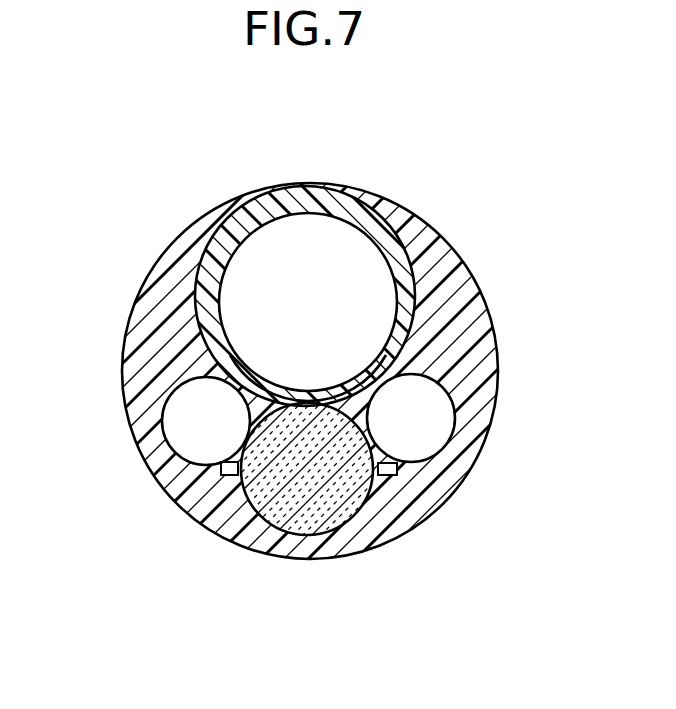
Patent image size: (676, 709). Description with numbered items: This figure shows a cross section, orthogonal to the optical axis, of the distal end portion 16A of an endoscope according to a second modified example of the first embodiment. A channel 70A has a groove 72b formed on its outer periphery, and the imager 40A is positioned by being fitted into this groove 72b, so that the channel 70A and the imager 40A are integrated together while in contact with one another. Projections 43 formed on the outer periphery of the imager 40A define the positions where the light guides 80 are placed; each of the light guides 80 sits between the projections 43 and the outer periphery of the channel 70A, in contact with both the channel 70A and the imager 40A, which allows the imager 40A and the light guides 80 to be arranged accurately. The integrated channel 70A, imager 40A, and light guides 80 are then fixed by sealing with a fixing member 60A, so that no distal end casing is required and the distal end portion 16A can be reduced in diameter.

The distal end portion 16A is at (338, 157).
The fixing member 60A is at (153, 307).
The channel 70A is at (403, 277).
The groove 72b is at (312, 392).
The light guides 80 is at (186, 427).
The projections 43 is at (229, 477).
The imager 40A is at (310, 518).